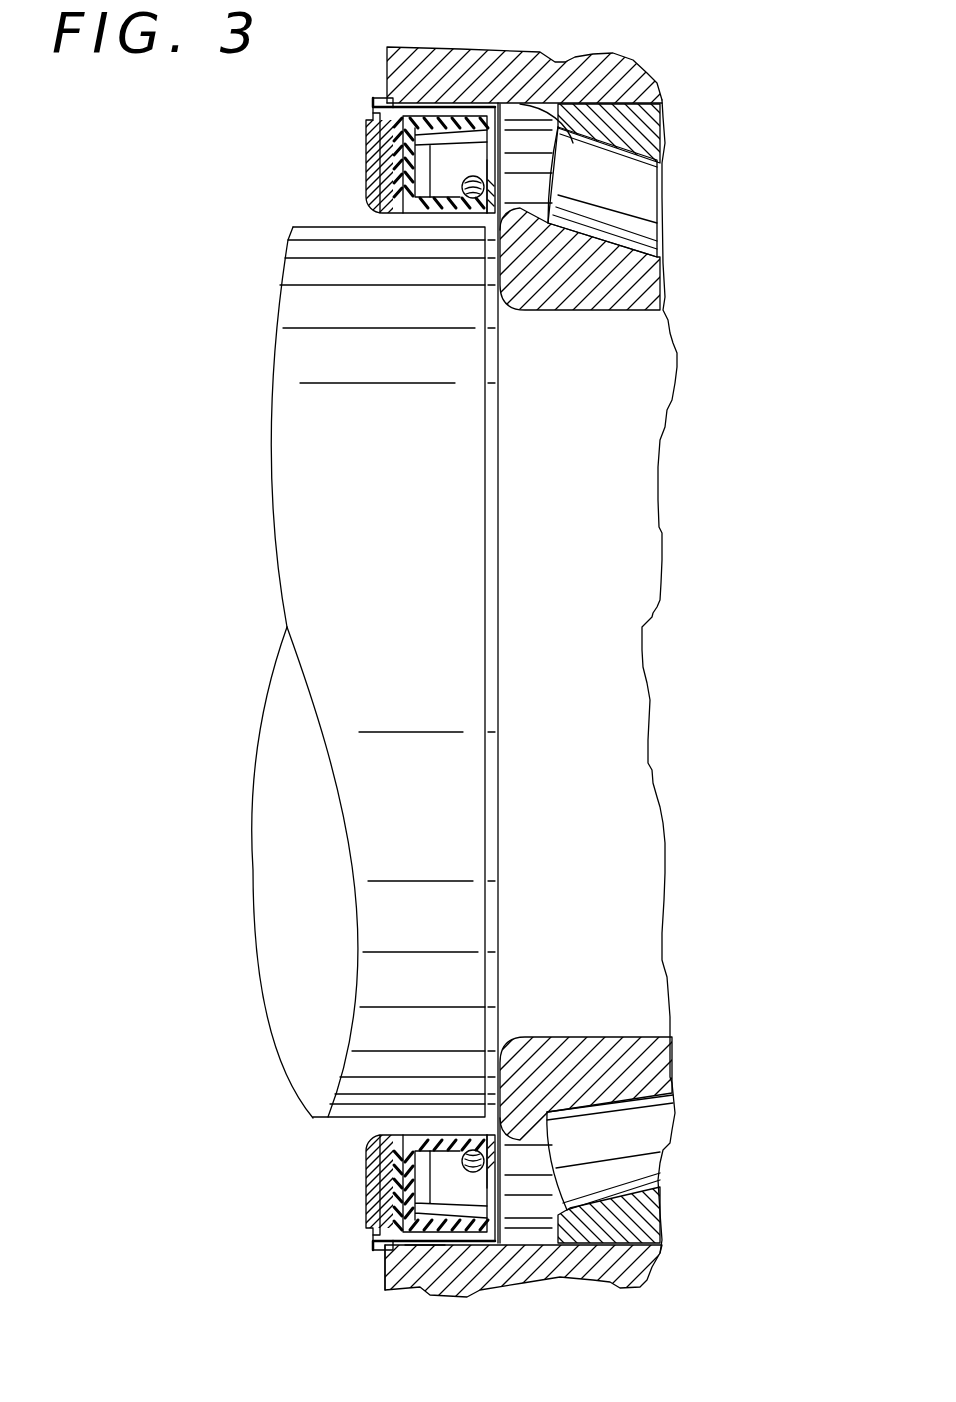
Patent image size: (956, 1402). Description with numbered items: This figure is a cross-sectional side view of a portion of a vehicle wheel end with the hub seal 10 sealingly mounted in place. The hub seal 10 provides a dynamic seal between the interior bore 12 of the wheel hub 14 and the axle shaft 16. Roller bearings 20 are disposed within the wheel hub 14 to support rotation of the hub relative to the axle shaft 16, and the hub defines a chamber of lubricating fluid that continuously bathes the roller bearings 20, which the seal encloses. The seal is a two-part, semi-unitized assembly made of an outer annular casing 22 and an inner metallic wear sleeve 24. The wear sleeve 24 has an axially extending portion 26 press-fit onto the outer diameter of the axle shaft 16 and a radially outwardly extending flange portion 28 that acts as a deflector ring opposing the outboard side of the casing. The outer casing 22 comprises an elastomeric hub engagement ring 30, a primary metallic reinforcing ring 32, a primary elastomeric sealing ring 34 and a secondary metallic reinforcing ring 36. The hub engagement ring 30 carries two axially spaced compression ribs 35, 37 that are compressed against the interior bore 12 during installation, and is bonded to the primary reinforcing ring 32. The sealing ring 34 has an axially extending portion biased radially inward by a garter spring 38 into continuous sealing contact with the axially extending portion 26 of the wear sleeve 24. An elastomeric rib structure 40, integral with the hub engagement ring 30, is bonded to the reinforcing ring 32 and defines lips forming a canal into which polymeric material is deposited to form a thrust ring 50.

The hub seal 10 is at (372, 114).
The interior bore 12 is at (662, 135).
The wheel hub 14 is at (567, 68).
The axle shaft 16 is at (308, 593).
The roller bearings 20 is at (637, 200).
The outer annular casing 22 is at (459, 112).
The inner metallic wear sleeve 24 is at (373, 189).
The axially extending portion 26 is at (370, 1167).
The radially outwardly extending flange portion 28 is at (372, 1220).
The hub engagement ring 30 is at (393, 1282).
The primary metallic reinforcing ring 32 is at (372, 1250).
The primary elastomeric sealing ring 34 is at (405, 1193).
The compression rib 35 is at (422, 1282).
The secondary metallic reinforcing ring 36 is at (500, 1220).
The compression rib 37 is at (455, 1245).
The garter spring 38 is at (503, 1133).
The elastomeric rib structure 40 is at (383, 152).
The thrust ring 50 is at (385, 103).